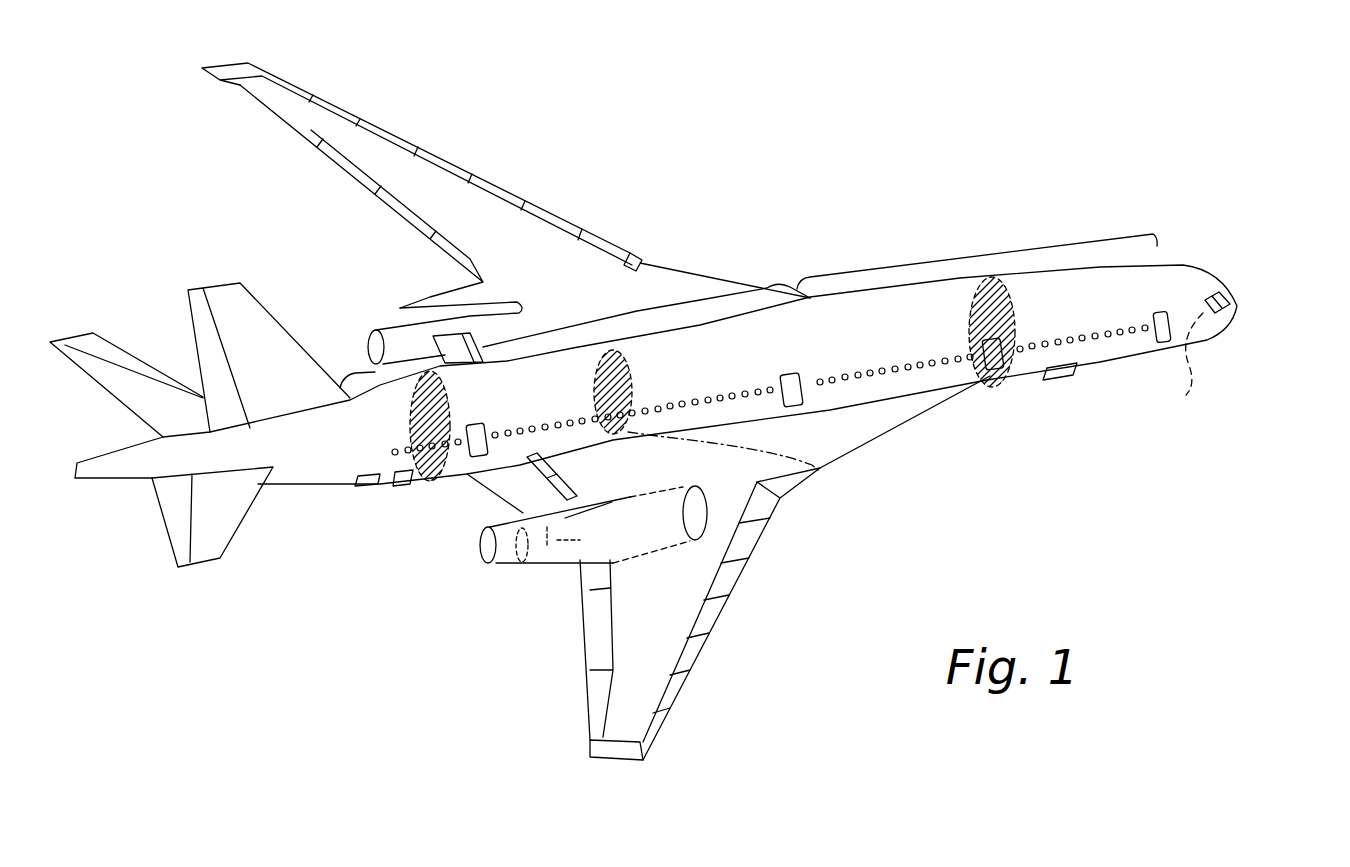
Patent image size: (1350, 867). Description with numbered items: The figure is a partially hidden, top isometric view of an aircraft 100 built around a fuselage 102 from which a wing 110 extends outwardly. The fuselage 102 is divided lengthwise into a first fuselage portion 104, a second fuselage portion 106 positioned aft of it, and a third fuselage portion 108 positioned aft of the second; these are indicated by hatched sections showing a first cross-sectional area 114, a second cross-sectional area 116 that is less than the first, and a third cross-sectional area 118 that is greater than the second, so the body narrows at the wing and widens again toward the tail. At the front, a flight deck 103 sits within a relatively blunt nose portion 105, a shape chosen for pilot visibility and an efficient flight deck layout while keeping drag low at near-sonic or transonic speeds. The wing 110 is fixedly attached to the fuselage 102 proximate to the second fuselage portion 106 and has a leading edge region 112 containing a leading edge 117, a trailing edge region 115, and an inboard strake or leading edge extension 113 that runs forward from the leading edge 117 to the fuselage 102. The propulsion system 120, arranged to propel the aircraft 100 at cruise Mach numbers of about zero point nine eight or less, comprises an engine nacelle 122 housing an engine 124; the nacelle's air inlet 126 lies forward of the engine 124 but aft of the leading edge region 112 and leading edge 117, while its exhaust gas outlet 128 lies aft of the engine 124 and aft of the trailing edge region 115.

The aircraft 100 is at (1092, 135).
The fuselage 102 is at (1185, 268).
The flight deck 103 is at (1182, 370).
The first fuselage portion 104 is at (985, 252).
The nose portion 105 is at (1243, 312).
The second fuselage portion 106 is at (637, 312).
The third fuselage portion 108 is at (378, 332).
The wing 110 is at (643, 760).
The leading edge region 112 is at (762, 522).
The leading edge extension 113 is at (847, 458).
The first cross-sectional area 114 is at (1013, 372).
The trailing edge region 115 is at (580, 590).
The second cross-sectional area 116 is at (825, 477).
The leading edge 117 is at (690, 660).
The third cross-sectional area 118 is at (410, 427).
The propulsion system 120 is at (340, 332).
The engine nacelle 122 is at (513, 567).
The engine 124 is at (560, 567).
The air inlet 126 is at (713, 627).
The exhaust gas outlet 128 is at (483, 532).